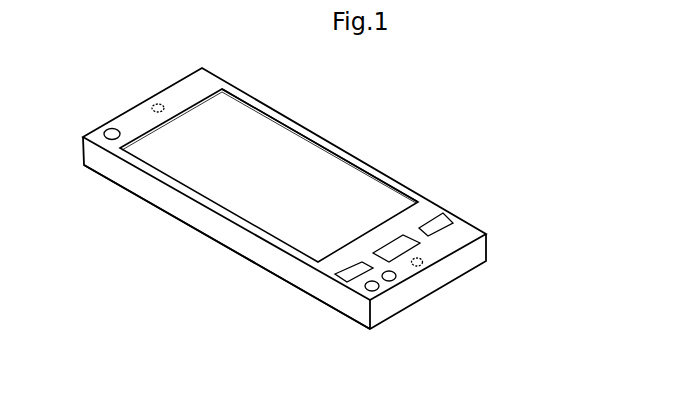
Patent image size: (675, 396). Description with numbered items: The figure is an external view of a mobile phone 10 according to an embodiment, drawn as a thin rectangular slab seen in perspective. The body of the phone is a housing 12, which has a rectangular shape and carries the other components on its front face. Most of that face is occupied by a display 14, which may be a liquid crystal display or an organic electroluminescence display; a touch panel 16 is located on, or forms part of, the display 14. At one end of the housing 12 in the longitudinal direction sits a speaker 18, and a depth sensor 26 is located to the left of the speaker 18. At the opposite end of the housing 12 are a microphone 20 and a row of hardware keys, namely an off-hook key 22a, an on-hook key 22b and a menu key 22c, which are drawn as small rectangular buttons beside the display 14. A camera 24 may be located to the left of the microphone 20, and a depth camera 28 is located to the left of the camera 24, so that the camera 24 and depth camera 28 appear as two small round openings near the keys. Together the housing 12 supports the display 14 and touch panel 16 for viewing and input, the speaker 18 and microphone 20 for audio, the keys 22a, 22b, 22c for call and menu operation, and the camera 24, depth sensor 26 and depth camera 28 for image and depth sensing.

The mobile phone 10 is at (76, 112).
The housing 12 is at (193, 222).
The display 14 is at (315, 157).
The touch panel 16 is at (373, 192).
The speaker 18 is at (162, 104).
The microphone 20 is at (422, 265).
The off-hook key 22a is at (341, 283).
The on-hook key 22b is at (443, 213).
The menu key 22c is at (407, 247).
The camera 24 is at (393, 282).
The depth sensor 26 is at (114, 128).
The depth camera 28 is at (374, 292).